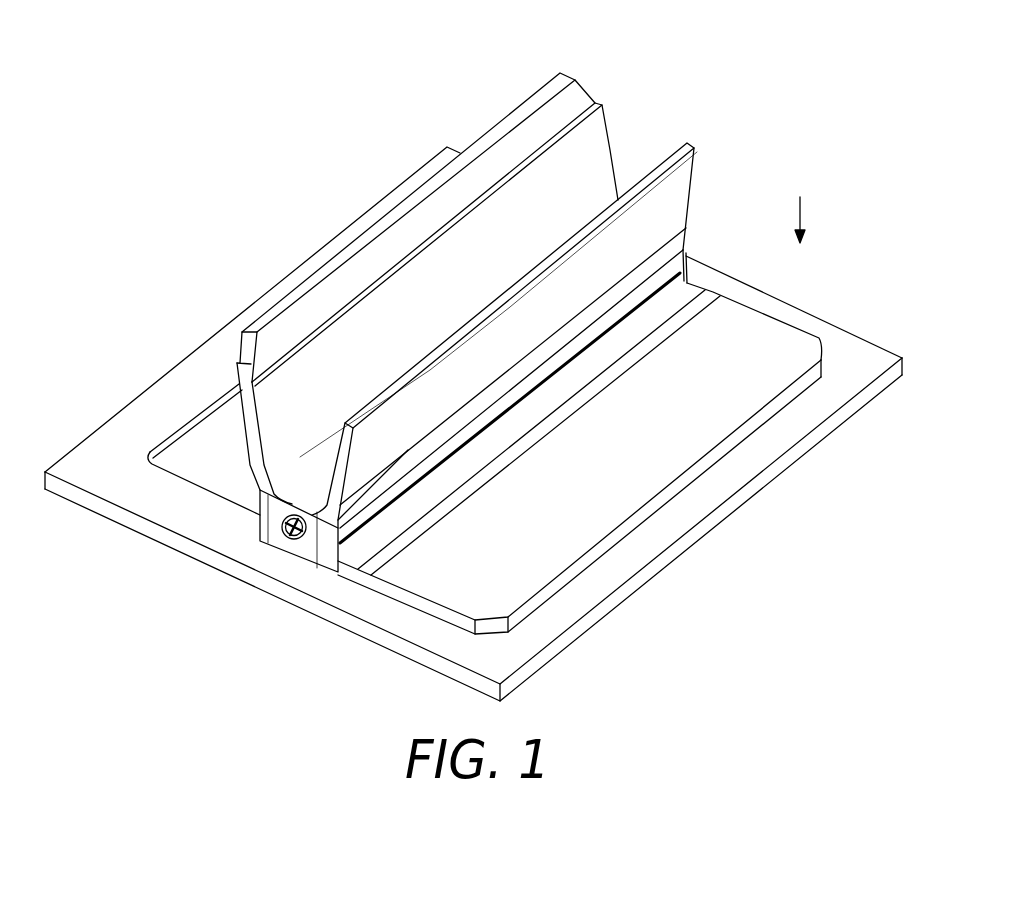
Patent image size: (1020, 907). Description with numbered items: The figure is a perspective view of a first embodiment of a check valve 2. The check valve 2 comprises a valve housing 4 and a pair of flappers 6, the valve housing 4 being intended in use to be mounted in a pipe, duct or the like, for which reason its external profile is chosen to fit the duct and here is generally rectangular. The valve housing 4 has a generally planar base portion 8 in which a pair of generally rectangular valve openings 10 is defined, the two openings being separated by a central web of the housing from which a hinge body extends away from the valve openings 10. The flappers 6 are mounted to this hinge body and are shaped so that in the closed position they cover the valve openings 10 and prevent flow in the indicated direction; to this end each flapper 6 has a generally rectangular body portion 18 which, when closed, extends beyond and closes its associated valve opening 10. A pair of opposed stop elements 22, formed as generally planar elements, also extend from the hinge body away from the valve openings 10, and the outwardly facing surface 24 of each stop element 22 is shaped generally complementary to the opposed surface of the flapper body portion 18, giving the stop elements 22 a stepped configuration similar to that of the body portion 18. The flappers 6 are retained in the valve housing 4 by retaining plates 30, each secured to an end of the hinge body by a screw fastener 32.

The check valve 2 is at (473, 367).
The valve housing 4 is at (473, 424).
The flapper 6 is at (580, 90).
The base portion 8 is at (140, 497).
The valve opening 10 is at (207, 432).
The body portion 18 is at (573, 537).
The stop element 22 is at (595, 134).
The outwardly facing surface 24 is at (397, 437).
The retaining plate 30 is at (264, 501).
The screw fastener 32 is at (282, 526).